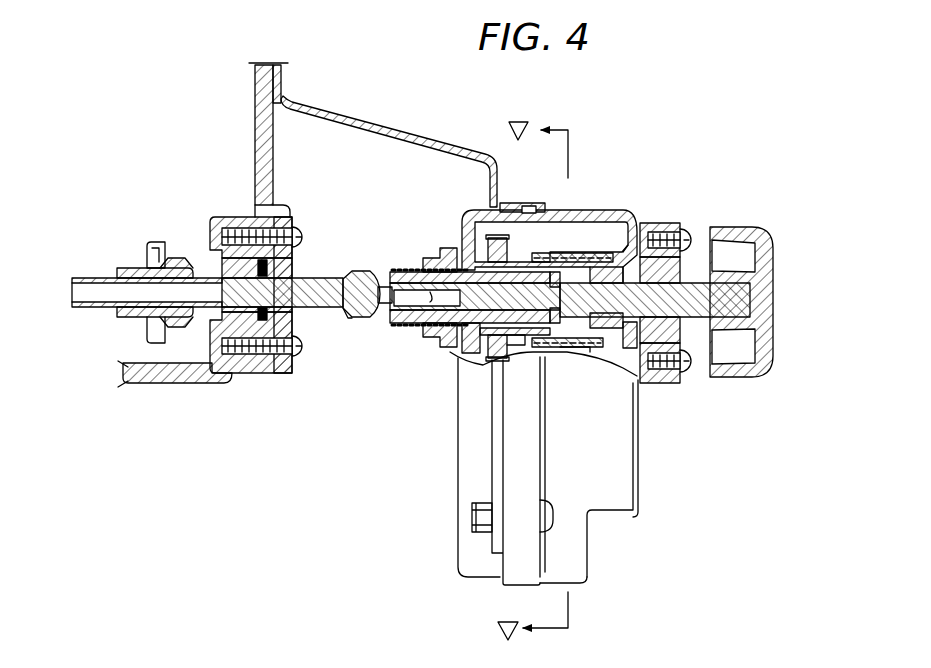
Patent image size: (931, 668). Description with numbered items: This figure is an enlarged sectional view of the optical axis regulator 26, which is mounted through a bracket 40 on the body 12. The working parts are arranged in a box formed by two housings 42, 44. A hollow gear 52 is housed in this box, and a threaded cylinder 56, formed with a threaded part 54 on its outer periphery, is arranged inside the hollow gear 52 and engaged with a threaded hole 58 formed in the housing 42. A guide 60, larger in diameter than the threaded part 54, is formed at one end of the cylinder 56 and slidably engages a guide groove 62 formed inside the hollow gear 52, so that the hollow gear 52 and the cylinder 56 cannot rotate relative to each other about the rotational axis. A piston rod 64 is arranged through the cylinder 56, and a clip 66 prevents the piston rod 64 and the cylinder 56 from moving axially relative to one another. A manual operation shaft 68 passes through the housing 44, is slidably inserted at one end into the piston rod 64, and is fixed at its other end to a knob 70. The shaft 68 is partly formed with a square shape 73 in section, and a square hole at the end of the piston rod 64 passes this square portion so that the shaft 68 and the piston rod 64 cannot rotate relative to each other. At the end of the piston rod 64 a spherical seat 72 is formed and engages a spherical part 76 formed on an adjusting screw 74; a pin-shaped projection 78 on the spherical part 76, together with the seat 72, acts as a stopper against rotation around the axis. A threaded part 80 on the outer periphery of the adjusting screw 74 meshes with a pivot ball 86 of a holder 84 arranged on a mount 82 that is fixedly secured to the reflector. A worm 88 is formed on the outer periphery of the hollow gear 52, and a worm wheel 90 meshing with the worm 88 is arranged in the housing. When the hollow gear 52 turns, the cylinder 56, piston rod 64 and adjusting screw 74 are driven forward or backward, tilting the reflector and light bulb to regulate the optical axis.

The body 12 is at (255, 180).
The optical axis regulator 26 is at (200, 390).
The bracket 40 is at (388, 130).
The housing 42 is at (455, 502).
The housing 44 is at (588, 556).
The hollow gear 52 is at (512, 240).
The threaded part 54 is at (410, 277).
The threaded cylinder 56 is at (402, 328).
The threaded hole 58 is at (455, 250).
The guide 60 is at (500, 262).
The guide groove 62 is at (612, 238).
The piston rod 64 is at (432, 290).
The clip 66 is at (560, 255).
The manual operation shaft 68 is at (698, 332).
The knob 70 is at (776, 274).
The spherical seat 72 is at (366, 280).
The square shape 73 is at (562, 300).
The adjusting screw 74 is at (330, 310).
The spherical part 76 is at (352, 290).
The pin-shaped projection 78 is at (358, 322).
The threaded part 80 is at (90, 278).
The mount 82 is at (155, 242).
The holder 84 is at (148, 332).
The pivot ball 86 is at (178, 320).
The worm 88 is at (537, 347).
The worm wheel 90 is at (590, 348).